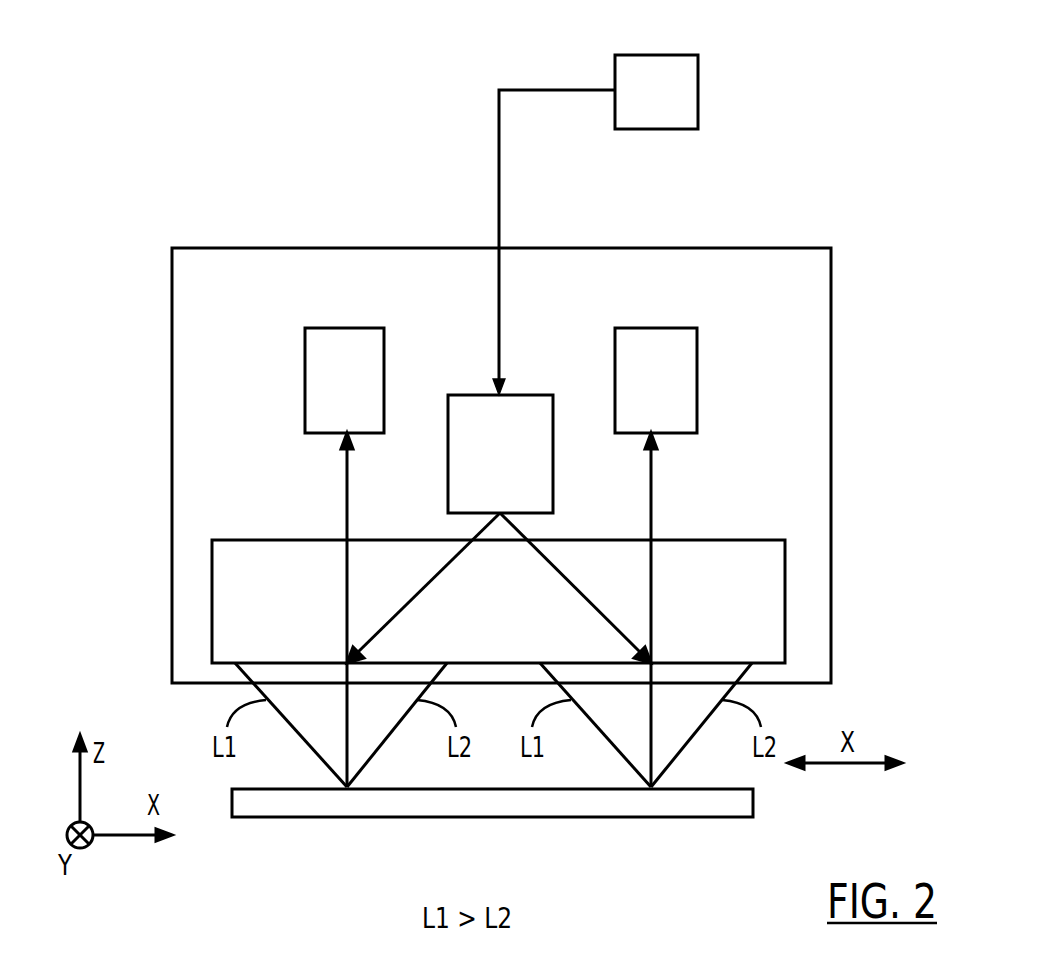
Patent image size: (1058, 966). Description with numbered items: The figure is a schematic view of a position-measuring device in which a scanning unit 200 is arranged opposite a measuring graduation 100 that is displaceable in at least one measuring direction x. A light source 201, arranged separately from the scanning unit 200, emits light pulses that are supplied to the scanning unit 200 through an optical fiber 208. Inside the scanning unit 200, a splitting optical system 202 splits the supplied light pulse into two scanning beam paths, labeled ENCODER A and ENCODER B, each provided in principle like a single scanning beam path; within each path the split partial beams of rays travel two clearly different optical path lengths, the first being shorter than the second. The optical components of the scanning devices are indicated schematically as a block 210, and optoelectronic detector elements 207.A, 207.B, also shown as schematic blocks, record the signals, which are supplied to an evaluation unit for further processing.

The measuring graduation 100 is at (710, 800).
The scanning unit 200 is at (858, 588).
The light source 201 is at (653, 75).
The splitting optical system 202 is at (467, 447).
The optoelectronic detector element 207.A is at (683, 368).
The optoelectronic detector element 207.B is at (317, 368).
The optical fiber 208 is at (542, 87).
The block of optical components 210 is at (704, 557).